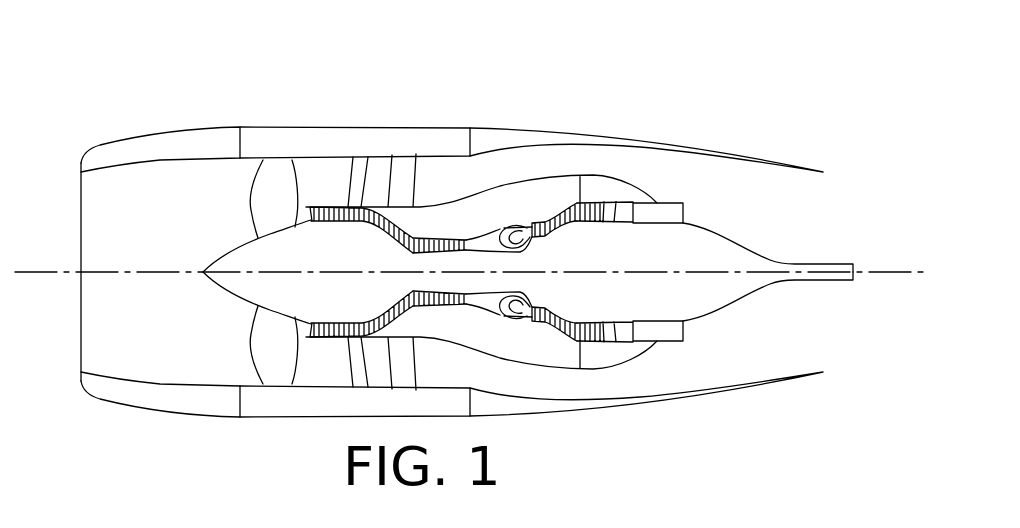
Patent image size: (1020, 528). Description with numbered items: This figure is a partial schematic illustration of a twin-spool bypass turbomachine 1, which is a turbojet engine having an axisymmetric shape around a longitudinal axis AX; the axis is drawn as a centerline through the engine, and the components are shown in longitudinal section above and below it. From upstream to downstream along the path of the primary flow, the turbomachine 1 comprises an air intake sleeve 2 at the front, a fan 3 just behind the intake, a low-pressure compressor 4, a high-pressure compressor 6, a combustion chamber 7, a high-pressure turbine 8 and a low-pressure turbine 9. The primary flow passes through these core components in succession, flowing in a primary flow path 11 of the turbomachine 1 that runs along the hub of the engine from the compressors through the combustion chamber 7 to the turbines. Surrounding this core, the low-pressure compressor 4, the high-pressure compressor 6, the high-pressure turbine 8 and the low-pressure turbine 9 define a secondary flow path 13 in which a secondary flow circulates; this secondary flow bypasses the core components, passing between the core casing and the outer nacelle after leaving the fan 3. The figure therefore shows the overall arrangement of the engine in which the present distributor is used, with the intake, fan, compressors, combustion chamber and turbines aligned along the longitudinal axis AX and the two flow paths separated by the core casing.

The turbomachine 1 is at (249, 90).
The air intake sleeve 2 is at (160, 272).
The fan 3 is at (265, 338).
The low-pressure compressor 4 is at (334, 208).
The high-pressure compressor 6 is at (451, 239).
The combustion chamber 7 is at (505, 229).
The high-pressure turbine 8 is at (535, 224).
The low-pressure turbine 9 is at (607, 203).
The primary flow path 11 is at (485, 238).
The secondary flow path 13 is at (513, 377).
The longitudinal axis AX is at (25, 272).